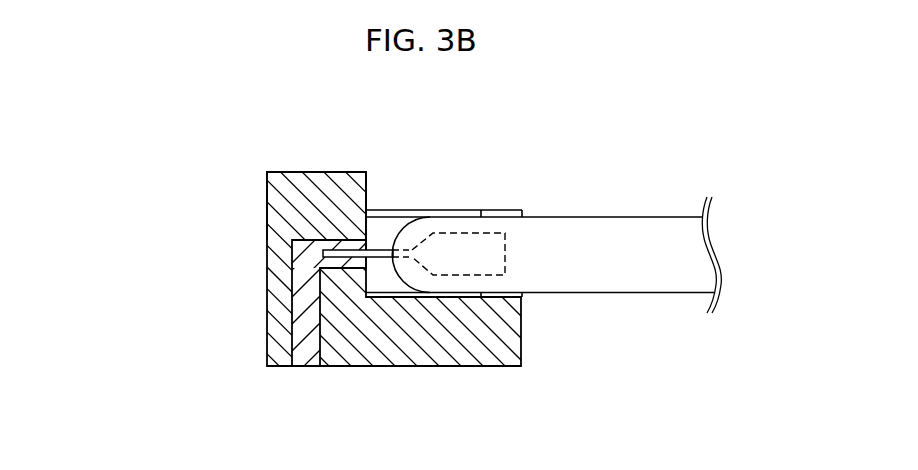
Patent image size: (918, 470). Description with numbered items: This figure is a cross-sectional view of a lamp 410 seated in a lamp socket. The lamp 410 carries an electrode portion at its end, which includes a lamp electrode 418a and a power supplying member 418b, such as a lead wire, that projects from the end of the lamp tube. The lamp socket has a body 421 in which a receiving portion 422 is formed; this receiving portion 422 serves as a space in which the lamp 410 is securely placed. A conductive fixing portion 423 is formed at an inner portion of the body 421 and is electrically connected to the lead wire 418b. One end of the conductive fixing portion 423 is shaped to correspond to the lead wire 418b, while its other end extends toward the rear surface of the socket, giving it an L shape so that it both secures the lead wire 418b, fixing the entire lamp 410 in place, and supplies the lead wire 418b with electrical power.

The lamp 410 is at (628, 295).
The lamp electrode 418a is at (505, 247).
The power supplying member 418b is at (361, 252).
The body 421 is at (267, 305).
The receiving portion 422 is at (377, 200).
The conductive fixing portion 423 is at (303, 340).